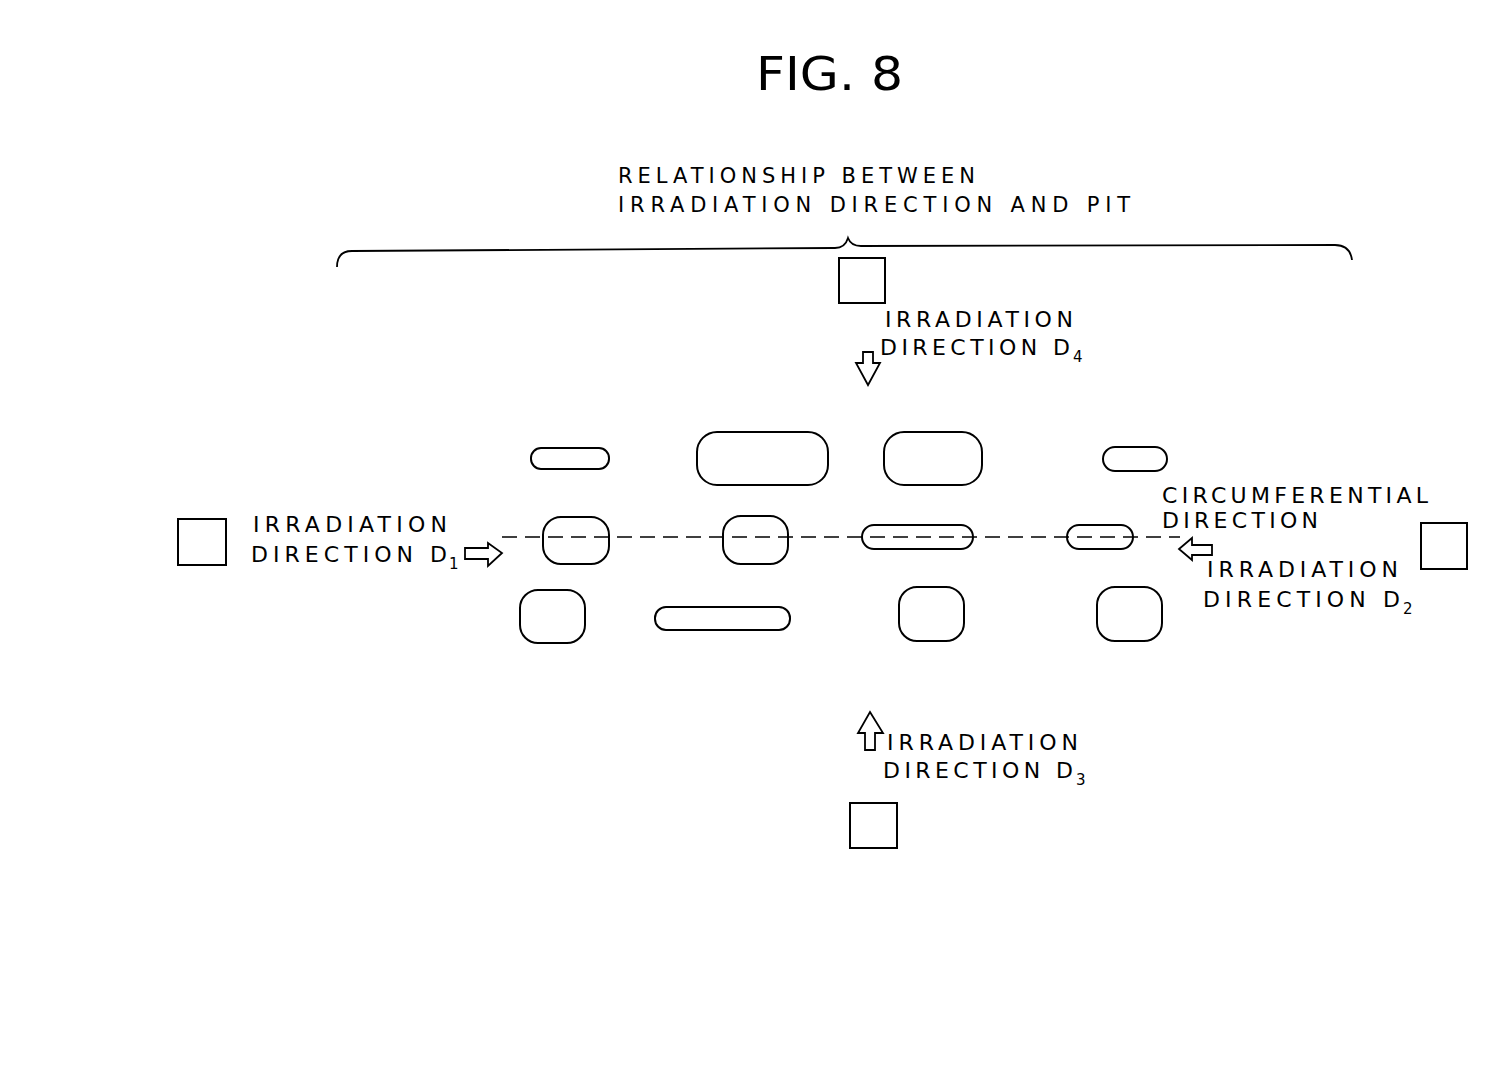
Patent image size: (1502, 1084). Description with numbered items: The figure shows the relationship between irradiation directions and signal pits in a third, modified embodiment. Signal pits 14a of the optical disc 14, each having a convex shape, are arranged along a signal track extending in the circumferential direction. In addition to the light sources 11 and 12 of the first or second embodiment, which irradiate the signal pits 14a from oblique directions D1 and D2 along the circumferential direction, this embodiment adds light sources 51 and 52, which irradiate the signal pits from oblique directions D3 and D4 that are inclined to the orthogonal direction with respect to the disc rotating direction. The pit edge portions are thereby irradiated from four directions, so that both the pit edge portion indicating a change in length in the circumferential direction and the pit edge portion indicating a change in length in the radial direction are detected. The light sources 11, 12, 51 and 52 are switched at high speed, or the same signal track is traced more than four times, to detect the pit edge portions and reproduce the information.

The light source 52 is at (885, 280).
The light source 12 is at (214, 519).
The light source 11 is at (1450, 523).
The light source 51 is at (897, 823).
The optical disc 14 is at (1034, 678).
The signal pits 14a is at (907, 633).